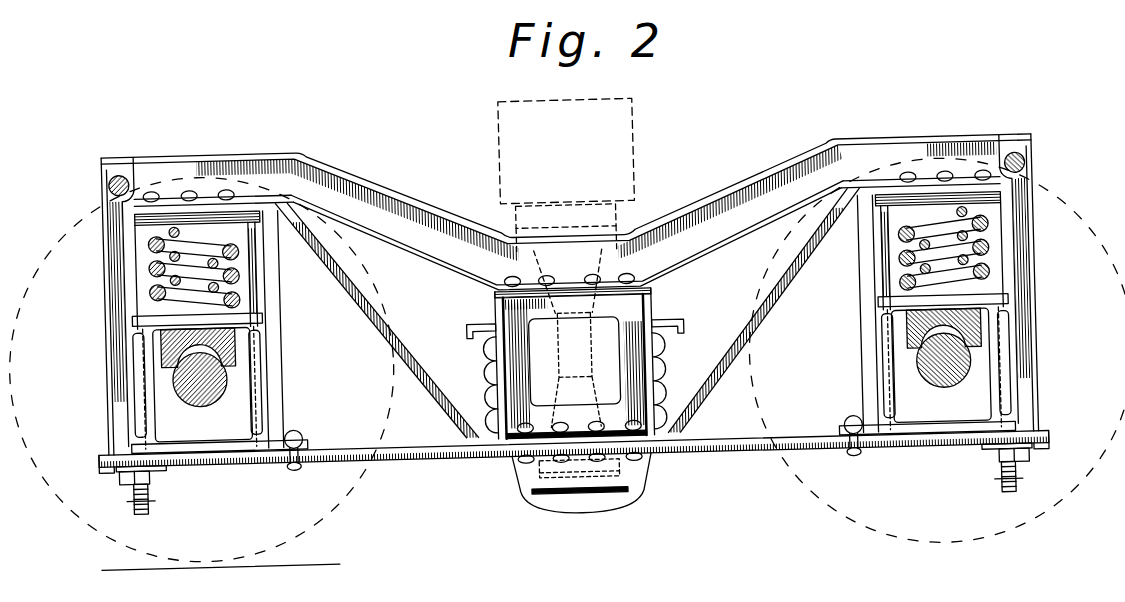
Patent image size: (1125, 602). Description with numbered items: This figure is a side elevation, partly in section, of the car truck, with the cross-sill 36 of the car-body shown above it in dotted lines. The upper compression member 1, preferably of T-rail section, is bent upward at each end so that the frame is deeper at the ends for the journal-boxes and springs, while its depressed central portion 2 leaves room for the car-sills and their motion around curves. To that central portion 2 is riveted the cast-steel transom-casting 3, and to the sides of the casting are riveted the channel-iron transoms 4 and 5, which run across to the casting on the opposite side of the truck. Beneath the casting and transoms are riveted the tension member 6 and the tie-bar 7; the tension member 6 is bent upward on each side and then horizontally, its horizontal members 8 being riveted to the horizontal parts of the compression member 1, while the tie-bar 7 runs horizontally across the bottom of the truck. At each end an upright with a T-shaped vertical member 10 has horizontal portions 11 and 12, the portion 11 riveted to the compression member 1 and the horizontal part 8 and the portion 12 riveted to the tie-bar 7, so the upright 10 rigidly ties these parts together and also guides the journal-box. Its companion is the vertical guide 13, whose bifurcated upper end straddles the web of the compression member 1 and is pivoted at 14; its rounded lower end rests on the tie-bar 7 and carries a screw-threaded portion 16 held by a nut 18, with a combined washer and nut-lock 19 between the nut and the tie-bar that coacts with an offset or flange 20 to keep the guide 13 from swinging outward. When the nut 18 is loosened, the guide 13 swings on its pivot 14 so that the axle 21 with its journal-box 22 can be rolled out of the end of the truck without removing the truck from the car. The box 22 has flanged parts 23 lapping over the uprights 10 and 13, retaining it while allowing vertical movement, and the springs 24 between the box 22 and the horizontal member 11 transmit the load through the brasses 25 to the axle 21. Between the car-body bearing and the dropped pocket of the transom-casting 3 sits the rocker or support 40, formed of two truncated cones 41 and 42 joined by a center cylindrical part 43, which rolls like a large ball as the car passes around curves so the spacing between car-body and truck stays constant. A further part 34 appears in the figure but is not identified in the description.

The upper compression member 1 is at (386, 193).
The depressed central portion 2 is at (616, 269).
The transom-casting 3 is at (646, 310).
The channel-iron transom 4 is at (476, 331).
The channel-iron transom 5 is at (676, 326).
The tension member 6 is at (570, 315).
The tie-bar 7 is at (421, 453).
The horizontal member 8 is at (260, 204).
The upright 10 is at (272, 335).
The horizontal portion 11 is at (245, 208).
The horizontal portion 12 is at (304, 433).
The vertical guide 13 is at (115, 278).
The pivot 14 is at (115, 178).
The screw-threaded portion 16 is at (132, 504).
The nut 18 is at (152, 474).
The combined washer and nut-lock 19 is at (159, 459).
The offset or flange 20 is at (96, 451).
The axle or journal 21 is at (166, 369).
The journal-box 22 is at (149, 344).
The flanged parts 23 is at (255, 314).
The springs 24 is at (152, 232).
The brasses 25 is at (1051, 381).
The bolster plate 34 is at (519, 214).
The cross-sill 36 is at (636, 182).
The rocker or support 40 is at (590, 315).
The truncated cone 41 is at (577, 232).
The truncated cone 42 is at (580, 420).
The center cylindrical part 43 is at (574, 370).